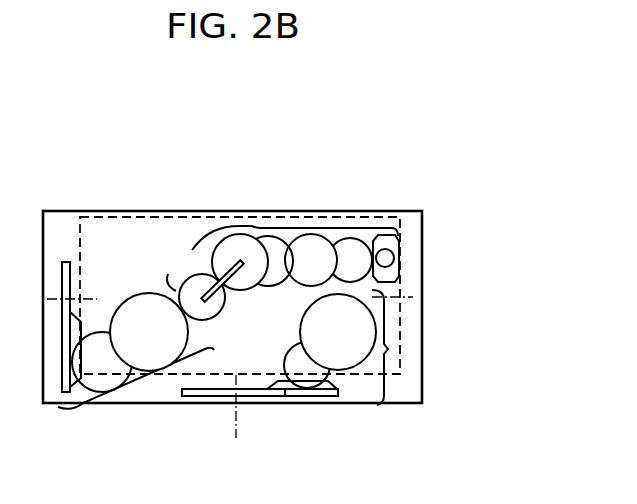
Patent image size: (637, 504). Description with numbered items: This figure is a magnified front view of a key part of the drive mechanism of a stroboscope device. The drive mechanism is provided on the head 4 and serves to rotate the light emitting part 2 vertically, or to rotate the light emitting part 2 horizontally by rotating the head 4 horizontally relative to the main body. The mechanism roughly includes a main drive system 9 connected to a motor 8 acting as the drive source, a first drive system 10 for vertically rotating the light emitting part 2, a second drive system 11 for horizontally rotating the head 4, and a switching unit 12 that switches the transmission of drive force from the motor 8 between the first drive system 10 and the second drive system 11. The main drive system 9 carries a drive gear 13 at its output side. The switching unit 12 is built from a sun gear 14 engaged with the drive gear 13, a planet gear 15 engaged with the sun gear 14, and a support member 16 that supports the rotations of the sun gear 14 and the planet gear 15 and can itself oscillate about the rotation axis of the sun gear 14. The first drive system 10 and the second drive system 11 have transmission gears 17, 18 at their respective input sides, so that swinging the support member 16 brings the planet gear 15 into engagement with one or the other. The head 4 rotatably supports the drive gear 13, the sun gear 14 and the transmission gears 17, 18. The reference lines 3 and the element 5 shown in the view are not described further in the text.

The light emitting part 2 is at (213, 219).
The reference line 3 is at (50, 297).
The head 4 is at (422, 377).
The guide rail 5 is at (237, 422).
The motor 8 is at (397, 238).
The main drive system 9 is at (325, 227).
The first drive system 10 is at (137, 380).
The second drive system 11 is at (385, 348).
The switching unit 12 is at (200, 275).
The drive gear 13 is at (275, 245).
The sun gear 14 is at (247, 245).
The planet gear 15 is at (176, 280).
The support member 16 is at (203, 292).
The transmission gear 17 is at (128, 328).
The transmission gear 18 is at (338, 355).